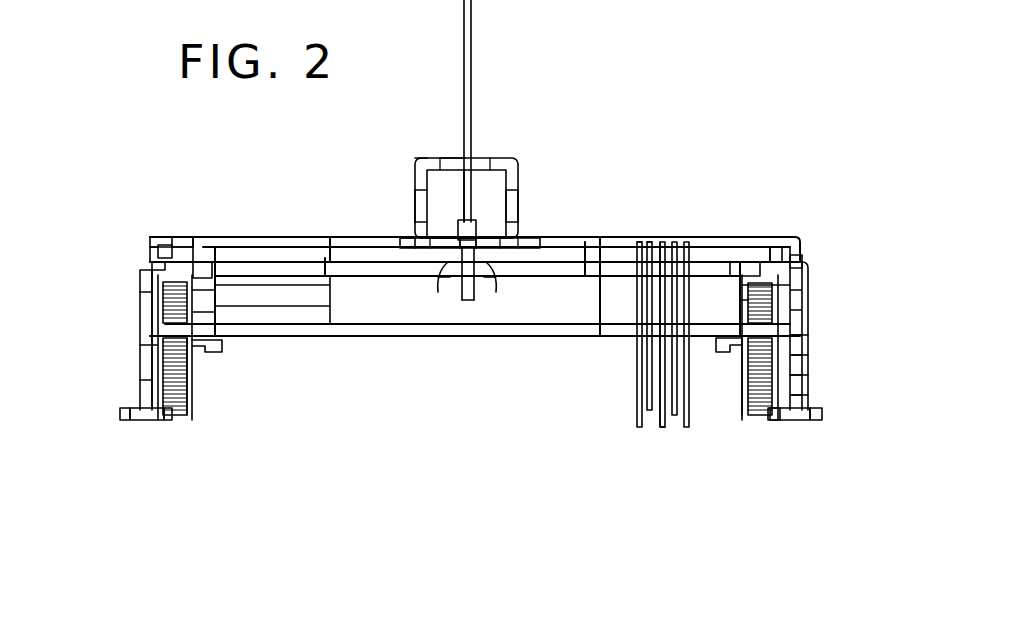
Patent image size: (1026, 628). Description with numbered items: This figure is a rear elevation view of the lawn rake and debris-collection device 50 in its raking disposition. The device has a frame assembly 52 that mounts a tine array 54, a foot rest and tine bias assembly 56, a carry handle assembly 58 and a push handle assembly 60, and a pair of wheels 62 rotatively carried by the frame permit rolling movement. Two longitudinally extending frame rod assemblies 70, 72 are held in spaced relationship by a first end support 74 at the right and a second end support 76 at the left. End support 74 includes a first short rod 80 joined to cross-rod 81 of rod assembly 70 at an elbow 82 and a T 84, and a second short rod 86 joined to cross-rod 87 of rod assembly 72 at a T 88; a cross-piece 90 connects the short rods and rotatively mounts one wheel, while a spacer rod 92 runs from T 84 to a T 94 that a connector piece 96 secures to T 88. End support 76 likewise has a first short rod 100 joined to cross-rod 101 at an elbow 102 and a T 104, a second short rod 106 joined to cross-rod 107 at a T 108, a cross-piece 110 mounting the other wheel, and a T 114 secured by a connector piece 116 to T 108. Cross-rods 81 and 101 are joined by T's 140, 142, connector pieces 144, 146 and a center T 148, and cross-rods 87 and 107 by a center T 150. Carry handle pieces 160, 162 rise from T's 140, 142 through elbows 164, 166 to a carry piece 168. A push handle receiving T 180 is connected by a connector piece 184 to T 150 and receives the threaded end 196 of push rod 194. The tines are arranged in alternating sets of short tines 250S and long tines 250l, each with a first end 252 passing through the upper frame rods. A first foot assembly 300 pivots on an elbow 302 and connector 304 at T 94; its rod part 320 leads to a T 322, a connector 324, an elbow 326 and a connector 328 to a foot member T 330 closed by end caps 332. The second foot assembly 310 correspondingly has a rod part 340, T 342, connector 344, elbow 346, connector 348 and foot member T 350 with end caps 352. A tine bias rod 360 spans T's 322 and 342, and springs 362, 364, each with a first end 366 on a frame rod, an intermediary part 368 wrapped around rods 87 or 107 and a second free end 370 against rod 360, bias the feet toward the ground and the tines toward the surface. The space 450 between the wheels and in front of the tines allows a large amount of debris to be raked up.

The lawn rake and debris-collection device 50 is at (632, 148).
The frame assembly 52 is at (742, 234).
The tine array 54 is at (610, 372).
The foot rest and tine bias assembly 56 is at (815, 302).
The carry handle assembly 58 is at (514, 148).
The push handle assembly 60 is at (480, 38).
The wheels 62 is at (186, 404).
The frame rod assembly 70 is at (622, 225).
The frame rod assembly 72 is at (542, 336).
The first end support 74 is at (862, 238).
The second end support 76 is at (128, 236).
The first short rod 80 is at (805, 258).
The cross-rod 81 is at (586, 240).
The elbow 82 is at (778, 254).
The T 84 is at (762, 246).
The second short rod 86 is at (712, 348).
The cross-rod 87 is at (479, 315).
The T 88 is at (732, 266).
The cross-piece 90 is at (738, 390).
The spacer rod 92 is at (785, 250).
The T 94 is at (756, 286).
The connector piece 96 is at (740, 297).
The first short rod 100 is at (150, 256).
The cross-rod 101 is at (303, 240).
The elbow 102 is at (155, 236).
The T 104 is at (180, 238).
The second short rod 106 is at (204, 314).
The cross-rod 107 is at (272, 300).
The T 108 is at (214, 246).
The cross-piece 110 is at (190, 262).
The T 114 is at (172, 268).
The connector piece 116 is at (210, 292).
The T 140 is at (516, 238).
The T 142 is at (415, 222).
The connector piece 144 is at (488, 238).
The connector piece 146 is at (446, 238).
The center T 148 is at (442, 266).
The center T 150 is at (466, 278).
The carry handle piece 160 is at (513, 205).
The carry handle piece 162 is at (415, 195).
The elbow 164 is at (515, 165).
The elbow 166 is at (420, 160).
The carry piece 168 is at (452, 160).
The push handle receiving T 180 is at (472, 215).
The connector piece 184 is at (490, 266).
The push rod 194 is at (464, 22).
The threaded end 196 is at (466, 186).
The short tines 250S is at (640, 430).
The long tines 250l is at (672, 430).
The first end of tine 252 is at (658, 240).
The first foot assembly 300 is at (812, 432).
The elbow 302 is at (808, 268).
The connector 304 is at (790, 306).
The second foot assembly 310 is at (150, 428).
The rod part 320 is at (809, 292).
The T 322 is at (809, 336).
The connector 324 is at (809, 356).
The elbow 326 is at (809, 374).
The connector 328 is at (809, 400).
The T (foot member) 330 is at (790, 422).
The end caps 332 is at (812, 422).
The rod part 340 is at (142, 300).
The T 342 is at (140, 318).
The connector 344 is at (148, 346).
The elbow 346 is at (180, 365).
The connector 348 is at (142, 378).
The T (foot member) 350 is at (160, 422).
The end caps 352 is at (128, 420).
The tine bias rod 360 is at (272, 280).
The spring 362 is at (603, 298).
The spring 364 is at (335, 314).
The first end of spring 366 is at (329, 256).
The intermediary part of spring 368 is at (543, 284).
The second free end of spring 370 is at (342, 336).
The space 450 is at (436, 418).